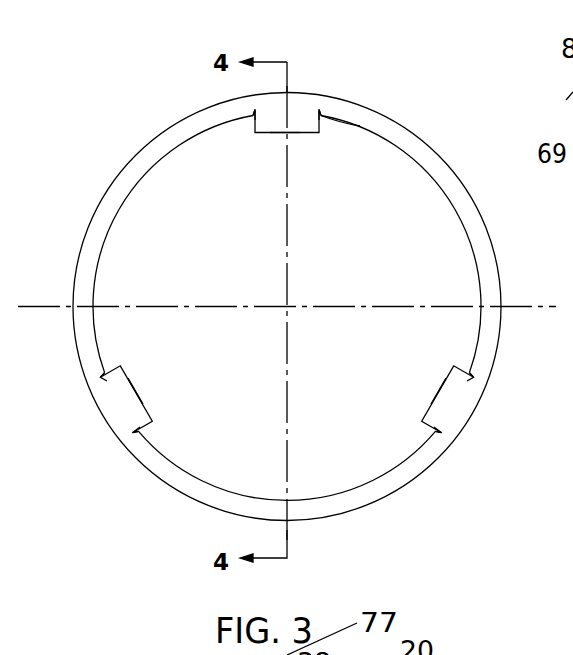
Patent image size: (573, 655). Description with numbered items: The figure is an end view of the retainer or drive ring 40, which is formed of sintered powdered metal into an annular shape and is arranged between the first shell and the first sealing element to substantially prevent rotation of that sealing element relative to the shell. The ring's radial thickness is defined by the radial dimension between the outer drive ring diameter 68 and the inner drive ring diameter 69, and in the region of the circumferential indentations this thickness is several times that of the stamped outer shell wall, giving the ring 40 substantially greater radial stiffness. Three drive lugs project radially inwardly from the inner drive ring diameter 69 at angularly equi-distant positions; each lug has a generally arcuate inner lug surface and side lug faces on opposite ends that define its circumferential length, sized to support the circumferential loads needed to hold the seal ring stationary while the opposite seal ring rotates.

The retainer ring 40 is at (310, 277).
The outer drive ring diameter 68 is at (340, 97).
The inner drive ring diameter 69 is at (352, 130).